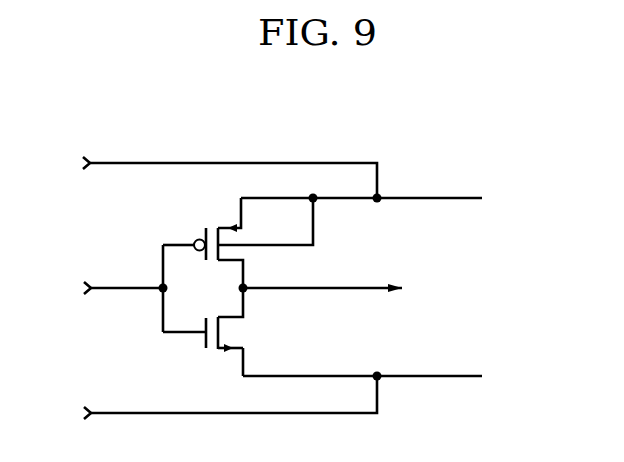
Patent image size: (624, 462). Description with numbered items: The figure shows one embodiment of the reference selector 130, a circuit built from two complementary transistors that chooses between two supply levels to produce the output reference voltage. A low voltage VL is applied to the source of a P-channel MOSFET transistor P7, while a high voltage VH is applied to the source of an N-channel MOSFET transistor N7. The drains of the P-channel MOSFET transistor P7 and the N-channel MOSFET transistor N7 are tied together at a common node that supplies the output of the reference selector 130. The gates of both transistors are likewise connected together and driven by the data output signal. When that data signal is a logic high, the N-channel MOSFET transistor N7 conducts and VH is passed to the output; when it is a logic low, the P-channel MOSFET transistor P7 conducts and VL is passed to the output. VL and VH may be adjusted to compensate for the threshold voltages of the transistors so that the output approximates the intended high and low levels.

The reference selector 130 is at (473, 123).
The P-channel MOSFET transistor P7 is at (238, 243).
The N-channel MOSFET transistor N7 is at (215, 332).